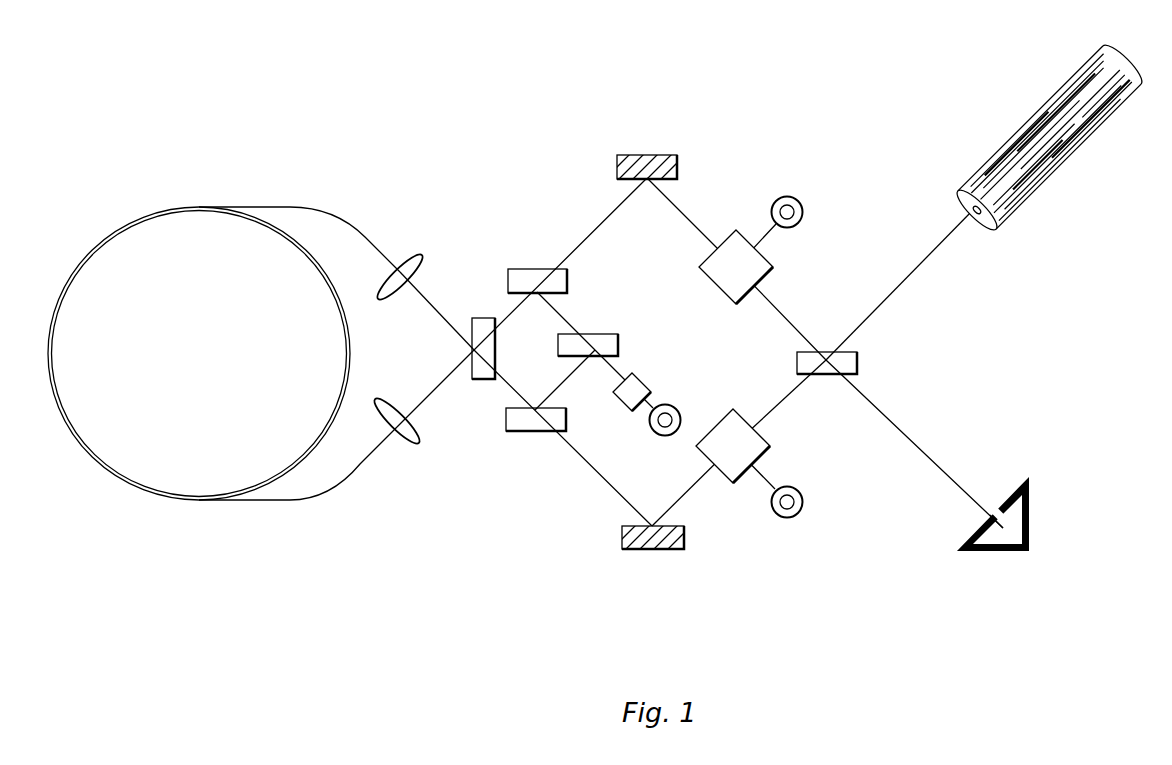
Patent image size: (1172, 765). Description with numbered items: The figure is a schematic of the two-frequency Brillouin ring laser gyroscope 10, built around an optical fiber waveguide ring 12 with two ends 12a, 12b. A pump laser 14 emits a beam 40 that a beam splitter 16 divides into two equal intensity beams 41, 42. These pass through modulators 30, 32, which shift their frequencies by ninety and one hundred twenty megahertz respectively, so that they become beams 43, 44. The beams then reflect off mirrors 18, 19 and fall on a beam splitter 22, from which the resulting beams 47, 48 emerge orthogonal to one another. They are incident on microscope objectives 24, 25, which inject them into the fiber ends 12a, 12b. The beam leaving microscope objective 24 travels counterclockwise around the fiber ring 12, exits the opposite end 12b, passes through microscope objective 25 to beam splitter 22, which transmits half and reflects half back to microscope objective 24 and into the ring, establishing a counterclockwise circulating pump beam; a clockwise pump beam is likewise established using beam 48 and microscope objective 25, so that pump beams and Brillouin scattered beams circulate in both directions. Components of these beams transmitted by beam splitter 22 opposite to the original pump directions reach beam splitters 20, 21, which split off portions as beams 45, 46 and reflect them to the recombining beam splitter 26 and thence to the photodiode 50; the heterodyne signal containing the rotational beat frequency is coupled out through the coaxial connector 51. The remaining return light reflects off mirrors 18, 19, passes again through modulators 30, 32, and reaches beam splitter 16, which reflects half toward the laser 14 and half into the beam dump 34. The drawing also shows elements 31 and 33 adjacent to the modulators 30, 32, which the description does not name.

The two-frequency Brillouin ring laser gyroscope 10 is at (708, 152).
The optical fiber waveguide ring 12 is at (190, 207).
The fiber end 12a is at (333, 207).
The fiber end 12b is at (322, 500).
The pump laser 14 is at (1043, 183).
The beam splitter 16 is at (857, 362).
The mirror 18 is at (663, 154).
The mirror 19 is at (662, 550).
The beam splitter 20 is at (525, 268).
The beam splitter 21 is at (513, 432).
The beam splitter 22 is at (487, 318).
The microscope objective 24 is at (412, 258).
The microscope objective 25 is at (416, 446).
The recombining beam splitter 26 is at (603, 333).
The modulator 30 is at (774, 266).
The photodetector 31 is at (799, 202).
The modulator 32 is at (770, 446).
The photodetector 33 is at (803, 502).
The beam dump 34 is at (1029, 505).
The beam 40 is at (898, 285).
The beam 41 is at (787, 318).
The beam 42 is at (776, 406).
The beam 43 is at (690, 219).
The beam 44 is at (686, 494).
The beam 45 is at (568, 322).
The beam 46 is at (566, 380).
The beam 47 is at (442, 318).
The beam 48 is at (421, 403).
The photodiode 50 is at (640, 378).
The coaxial connector 51 is at (668, 405).